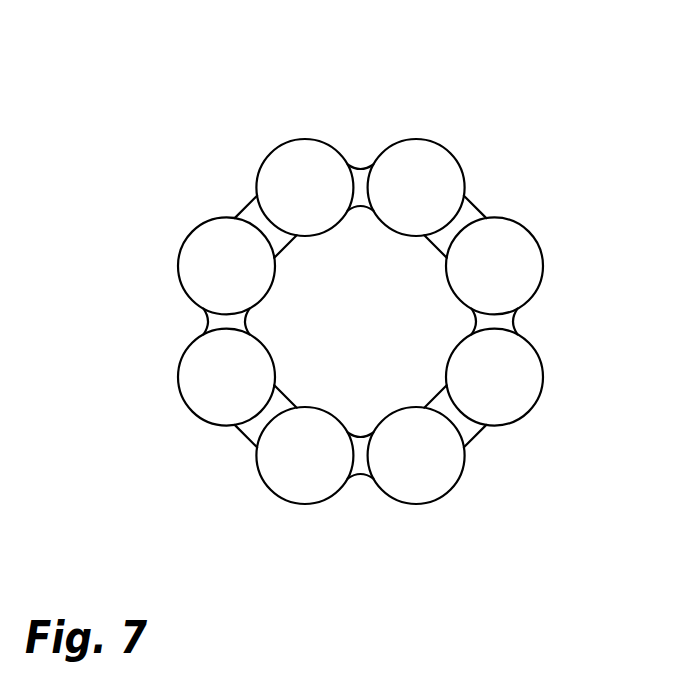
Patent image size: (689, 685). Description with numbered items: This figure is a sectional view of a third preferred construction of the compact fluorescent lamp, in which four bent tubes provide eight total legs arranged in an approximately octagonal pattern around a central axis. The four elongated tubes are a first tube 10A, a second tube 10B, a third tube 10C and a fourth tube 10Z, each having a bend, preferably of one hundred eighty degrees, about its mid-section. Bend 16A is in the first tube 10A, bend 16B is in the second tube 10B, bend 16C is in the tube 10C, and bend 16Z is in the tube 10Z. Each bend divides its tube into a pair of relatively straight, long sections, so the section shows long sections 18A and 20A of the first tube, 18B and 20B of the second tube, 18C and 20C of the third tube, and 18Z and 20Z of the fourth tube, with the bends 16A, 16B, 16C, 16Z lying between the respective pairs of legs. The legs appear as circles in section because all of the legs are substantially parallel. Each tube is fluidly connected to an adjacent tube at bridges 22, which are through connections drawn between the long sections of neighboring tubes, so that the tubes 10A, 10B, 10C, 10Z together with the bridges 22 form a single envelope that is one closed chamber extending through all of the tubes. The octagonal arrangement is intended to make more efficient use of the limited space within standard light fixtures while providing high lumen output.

The first tube 10A is at (402, 129).
The second tube 10B is at (147, 312).
The last tube 10C is at (564, 316).
The tube 10Z is at (333, 500).
The bend 16A is at (361, 168).
The bend 16B is at (207, 323).
The bend 16C is at (514, 325).
The bend 16Z is at (364, 477).
The long section 18A is at (455, 157).
The long section 18B is at (184, 241).
The long section 18C is at (537, 400).
The long section 18Z is at (262, 478).
The long section 20A is at (302, 139).
The long section 20B is at (178, 377).
The long section 20C is at (536, 241).
The long section 20Z is at (446, 494).
The bridges 22 is at (235, 218).